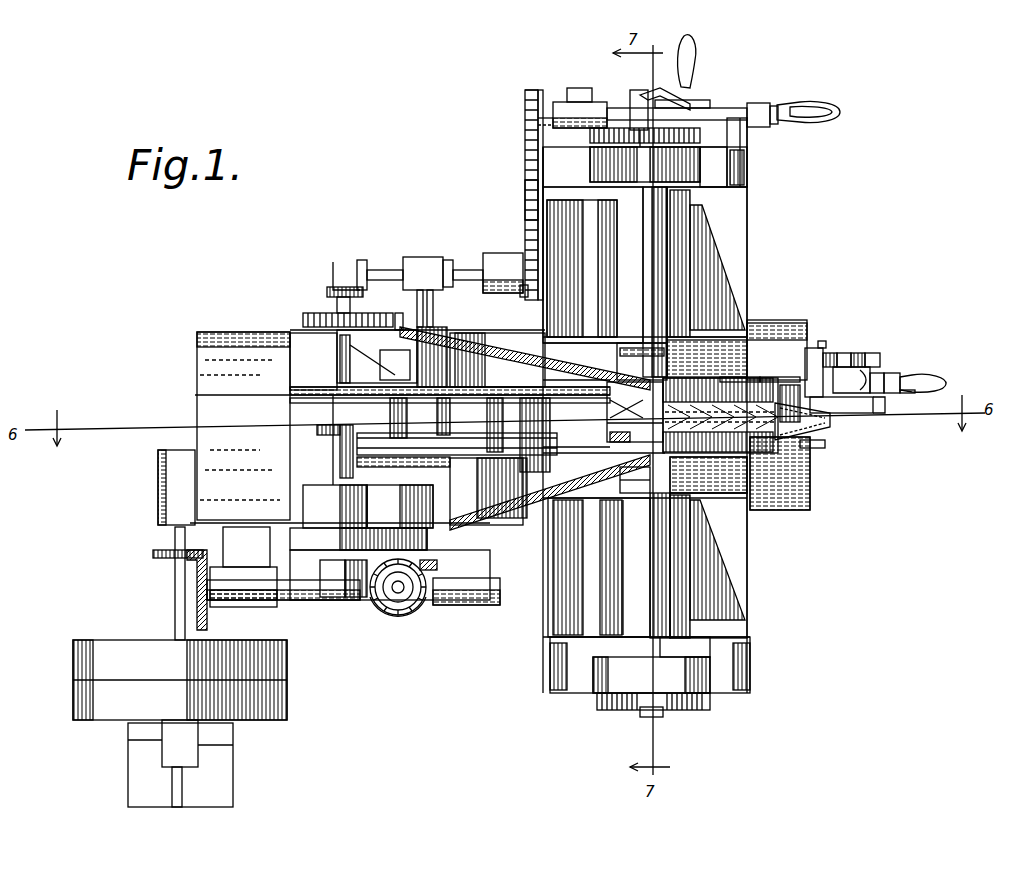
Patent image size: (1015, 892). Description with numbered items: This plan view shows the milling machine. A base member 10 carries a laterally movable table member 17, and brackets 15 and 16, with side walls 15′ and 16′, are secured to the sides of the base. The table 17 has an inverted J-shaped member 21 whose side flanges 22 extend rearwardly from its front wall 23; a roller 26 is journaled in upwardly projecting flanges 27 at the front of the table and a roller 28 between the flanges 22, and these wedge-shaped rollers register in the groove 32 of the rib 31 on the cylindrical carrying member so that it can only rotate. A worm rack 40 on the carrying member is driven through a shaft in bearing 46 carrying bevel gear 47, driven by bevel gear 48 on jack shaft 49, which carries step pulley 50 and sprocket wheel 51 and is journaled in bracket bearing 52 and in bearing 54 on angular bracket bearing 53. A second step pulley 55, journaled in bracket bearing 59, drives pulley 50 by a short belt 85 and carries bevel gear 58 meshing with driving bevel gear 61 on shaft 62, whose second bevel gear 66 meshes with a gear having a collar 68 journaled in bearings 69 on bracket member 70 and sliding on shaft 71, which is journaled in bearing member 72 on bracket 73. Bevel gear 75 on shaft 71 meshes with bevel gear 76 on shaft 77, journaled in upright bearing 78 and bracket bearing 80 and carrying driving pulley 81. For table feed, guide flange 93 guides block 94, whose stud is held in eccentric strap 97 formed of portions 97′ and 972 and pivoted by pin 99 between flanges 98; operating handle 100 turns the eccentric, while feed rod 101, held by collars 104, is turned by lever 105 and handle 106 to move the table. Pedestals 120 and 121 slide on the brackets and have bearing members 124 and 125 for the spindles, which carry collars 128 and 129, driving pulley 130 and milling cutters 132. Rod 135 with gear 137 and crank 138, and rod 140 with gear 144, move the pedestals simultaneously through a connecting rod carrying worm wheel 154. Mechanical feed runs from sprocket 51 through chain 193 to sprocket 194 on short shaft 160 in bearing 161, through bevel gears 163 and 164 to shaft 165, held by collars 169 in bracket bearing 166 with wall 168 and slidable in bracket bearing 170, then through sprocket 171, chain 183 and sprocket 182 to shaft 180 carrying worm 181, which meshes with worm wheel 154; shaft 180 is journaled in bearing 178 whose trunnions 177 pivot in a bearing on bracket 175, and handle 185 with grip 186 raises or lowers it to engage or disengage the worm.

The base member 10 is at (243, 426).
The bracket member 15 is at (745, 165).
The side walls 15′ is at (748, 178).
The bracket member 16 is at (740, 693).
The side walls 16′ is at (548, 672).
The table member 17 is at (805, 485).
The inverted J-shaped member 21 is at (550, 492).
The side walls or flanges 22 is at (508, 410).
The front wall 23 is at (493, 435).
The second roller 26 is at (826, 426).
The flanges 27 is at (812, 448).
The third roller 28 is at (607, 432).
The rib 31 is at (740, 367).
The groove 32 is at (780, 367).
The worm rack 40 is at (762, 455).
The bearing 46 is at (412, 440).
The beveled gear wheel 47 is at (347, 435).
The bevel gear 48 is at (317, 430).
The jack shaft 49 is at (292, 401).
The step pulley 50 is at (335, 507).
The sprocket wheel 51 is at (303, 320).
The bracket bearing 52 is at (300, 365).
The angular bracket bearing 53 is at (360, 597).
The bearing 54 is at (330, 580).
The second step pulley 55 is at (400, 506).
The bevel gear 58 is at (437, 565).
The bracket bearing 59 is at (395, 365).
The driving bevel gear 61 is at (410, 597).
The shaft 62 is at (398, 612).
The second bevel gear 66 is at (395, 593).
The collar 68 is at (425, 600).
The bearings 69 is at (475, 605).
The bracket member 70 is at (390, 569).
The shaft 71 is at (290, 600).
The bearing member 72 is at (243, 587).
The bracket 73 is at (246, 547).
The bevel gear 75 is at (197, 608).
The bevel gear 76 is at (153, 554).
The shaft 77 is at (175, 582).
The upright bearing 78 is at (165, 755).
The bracket bearing 80 is at (158, 500).
The driving pulley 81 is at (180, 680).
The short belt 85 is at (358, 539).
The guide flange 93 is at (880, 413).
The block 94 is at (852, 385).
The eccentric strap 97 is at (832, 353).
The strap portion 97′ is at (872, 353).
The strap portion 972 is at (845, 353).
The flanges 98 is at (823, 343).
The pivot pin 99 is at (812, 348).
The operating handle 100 is at (877, 373).
The feed rod 101 is at (895, 380).
The collars 104 is at (841, 407).
The operating lever 105 is at (935, 380).
The handle 106 is at (908, 393).
The pedestal 120 is at (593, 265).
The pedestal 121 is at (599, 567).
The bearing member 124 is at (646, 282).
The bearing member 125 is at (690, 565).
The collar 128 is at (672, 188).
The collar 129 is at (650, 462).
The driving pulley 130 is at (645, 164).
The milling cutter 132 is at (707, 416).
The rod 135 is at (632, 125).
The gear 137 is at (685, 125).
The operating crank 138 is at (677, 82).
The rod 140 is at (645, 717).
The gear 144 is at (685, 705).
The worm wheel 154 is at (682, 96).
The short shaft 160 is at (337, 305).
The bearing 161 is at (377, 356).
The bevel gear 163 is at (330, 288).
The second bevel gear 164 is at (360, 260).
The shaft 165 is at (385, 270).
The bracket bearing 166 is at (420, 270).
The wall 168 is at (400, 315).
The collars 169 is at (450, 265).
The bracket bearing 170 is at (500, 282).
The sprocket wheel 171 is at (524, 295).
The bracket 175 is at (572, 95).
The trunnions 177 is at (555, 105).
The bearing 178 is at (580, 115).
The shaft 180 is at (540, 120).
The worm 181 is at (628, 125).
The second sprocket 182 is at (525, 95).
The chain 183 is at (525, 197).
The handle 185 is at (818, 90).
The grip 186 is at (815, 118).
The chain 193 is at (258, 336).
The sprocket 194 is at (481, 357).